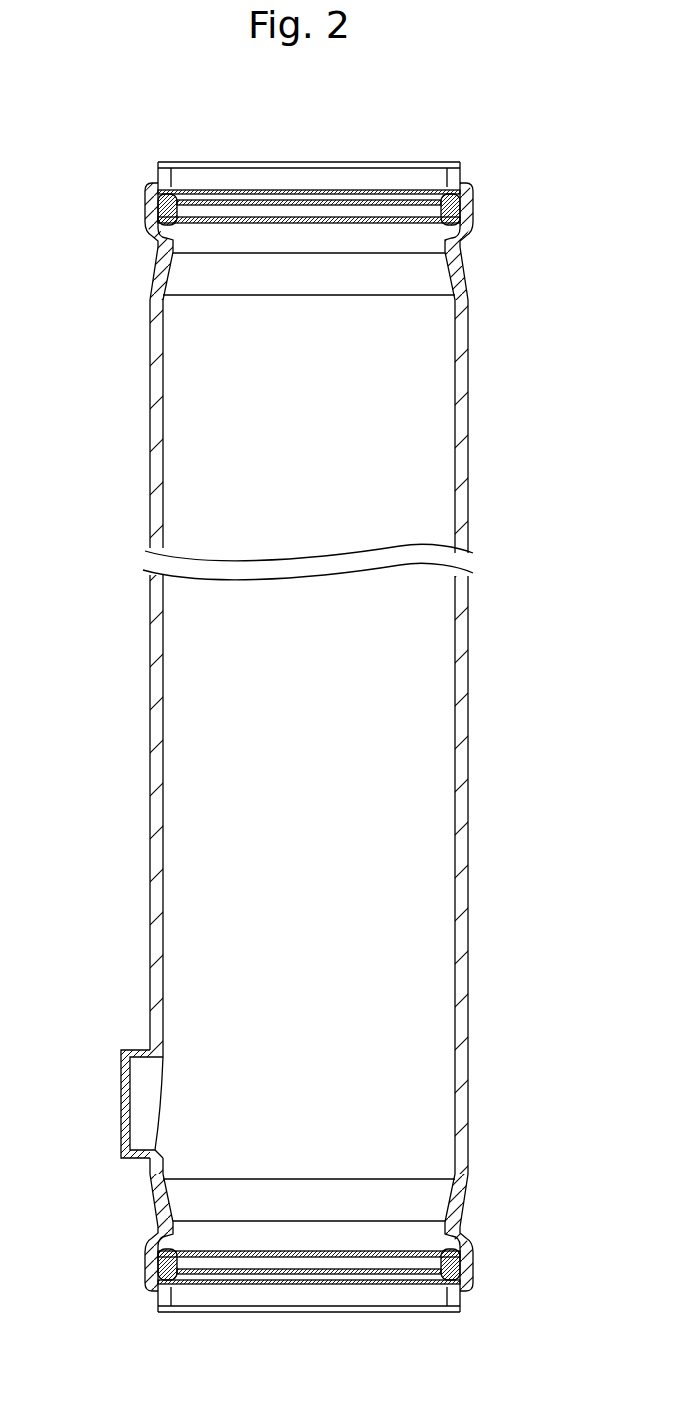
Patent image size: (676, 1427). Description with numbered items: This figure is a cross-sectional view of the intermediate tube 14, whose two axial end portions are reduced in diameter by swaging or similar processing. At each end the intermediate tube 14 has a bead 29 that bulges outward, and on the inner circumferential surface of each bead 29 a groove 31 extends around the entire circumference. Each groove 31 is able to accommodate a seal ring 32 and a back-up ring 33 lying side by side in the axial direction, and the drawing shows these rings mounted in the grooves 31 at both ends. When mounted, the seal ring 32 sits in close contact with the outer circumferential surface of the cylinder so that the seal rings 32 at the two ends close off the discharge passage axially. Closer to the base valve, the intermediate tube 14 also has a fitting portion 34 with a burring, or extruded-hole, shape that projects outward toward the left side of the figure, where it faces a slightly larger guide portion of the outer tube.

The intermediate tube 14 is at (457, 755).
The bead 29 is at (473, 203).
The groove 31 is at (440, 241).
The seal ring 32 is at (163, 214).
The back-up ring 33 is at (163, 196).
The fitting portion 34 is at (135, 1047).